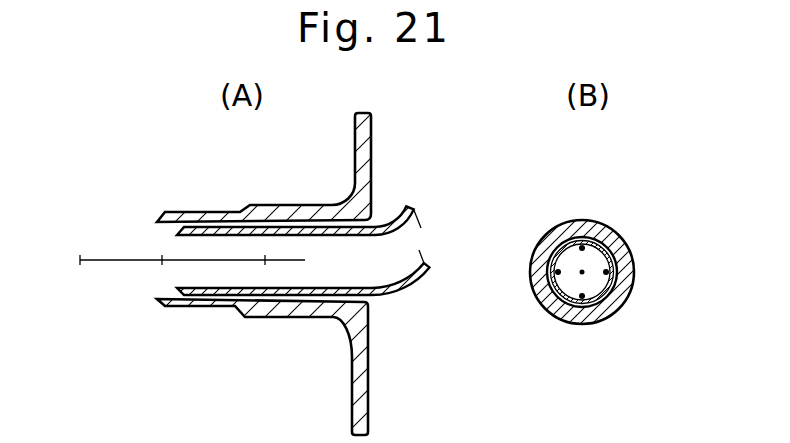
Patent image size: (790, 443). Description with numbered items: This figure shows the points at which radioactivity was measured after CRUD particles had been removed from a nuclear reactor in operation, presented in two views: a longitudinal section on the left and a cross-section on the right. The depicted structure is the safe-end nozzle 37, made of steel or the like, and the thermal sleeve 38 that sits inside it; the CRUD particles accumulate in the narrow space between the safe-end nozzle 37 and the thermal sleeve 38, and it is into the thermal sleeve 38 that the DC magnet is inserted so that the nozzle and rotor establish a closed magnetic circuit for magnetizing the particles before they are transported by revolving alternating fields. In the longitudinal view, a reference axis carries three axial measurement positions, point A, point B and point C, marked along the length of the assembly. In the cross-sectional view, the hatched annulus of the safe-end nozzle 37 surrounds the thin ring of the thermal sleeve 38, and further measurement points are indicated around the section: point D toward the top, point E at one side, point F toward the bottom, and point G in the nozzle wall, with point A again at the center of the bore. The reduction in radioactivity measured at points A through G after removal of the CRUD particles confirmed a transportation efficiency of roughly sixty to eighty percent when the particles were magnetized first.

The safe-end nozzle 37 is at (358, 150).
The thermal sleeve 38 is at (402, 215).
The measurement point A is at (582, 272).
The measurement point B is at (162, 271).
The measurement point C is at (80, 271).
The measurement point D is at (582, 243).
The measurement point E is at (553, 275).
The measurement point F is at (580, 300).
The measurement point G is at (625, 299).